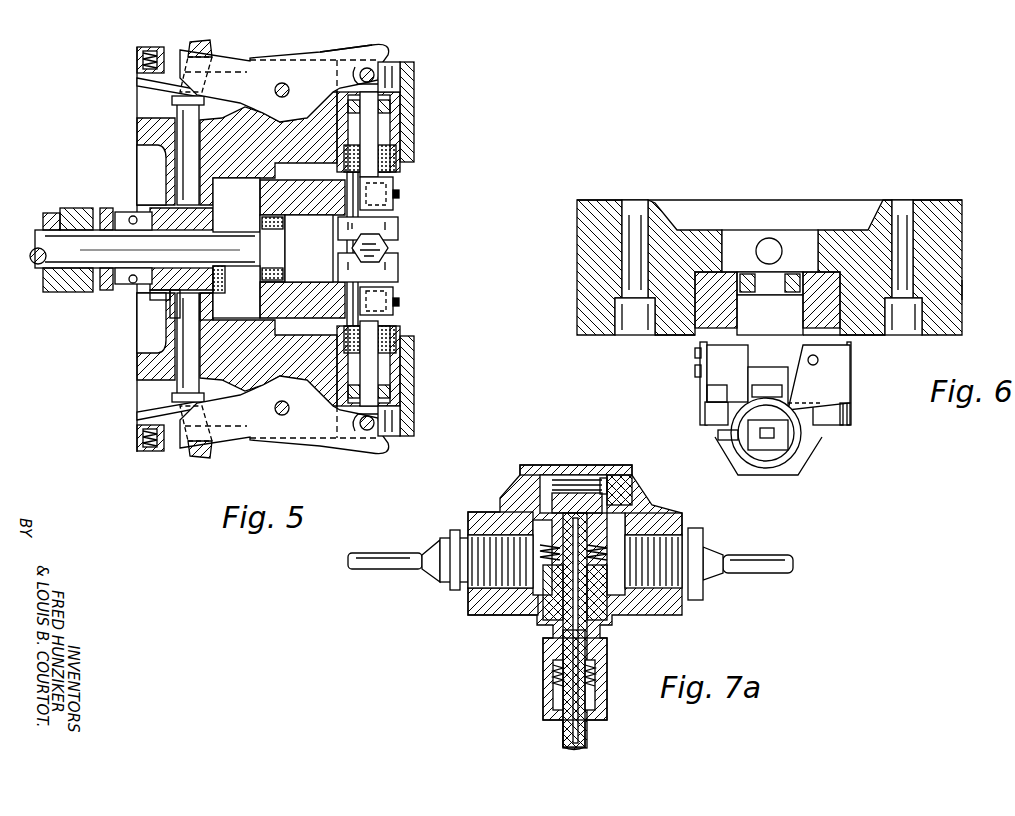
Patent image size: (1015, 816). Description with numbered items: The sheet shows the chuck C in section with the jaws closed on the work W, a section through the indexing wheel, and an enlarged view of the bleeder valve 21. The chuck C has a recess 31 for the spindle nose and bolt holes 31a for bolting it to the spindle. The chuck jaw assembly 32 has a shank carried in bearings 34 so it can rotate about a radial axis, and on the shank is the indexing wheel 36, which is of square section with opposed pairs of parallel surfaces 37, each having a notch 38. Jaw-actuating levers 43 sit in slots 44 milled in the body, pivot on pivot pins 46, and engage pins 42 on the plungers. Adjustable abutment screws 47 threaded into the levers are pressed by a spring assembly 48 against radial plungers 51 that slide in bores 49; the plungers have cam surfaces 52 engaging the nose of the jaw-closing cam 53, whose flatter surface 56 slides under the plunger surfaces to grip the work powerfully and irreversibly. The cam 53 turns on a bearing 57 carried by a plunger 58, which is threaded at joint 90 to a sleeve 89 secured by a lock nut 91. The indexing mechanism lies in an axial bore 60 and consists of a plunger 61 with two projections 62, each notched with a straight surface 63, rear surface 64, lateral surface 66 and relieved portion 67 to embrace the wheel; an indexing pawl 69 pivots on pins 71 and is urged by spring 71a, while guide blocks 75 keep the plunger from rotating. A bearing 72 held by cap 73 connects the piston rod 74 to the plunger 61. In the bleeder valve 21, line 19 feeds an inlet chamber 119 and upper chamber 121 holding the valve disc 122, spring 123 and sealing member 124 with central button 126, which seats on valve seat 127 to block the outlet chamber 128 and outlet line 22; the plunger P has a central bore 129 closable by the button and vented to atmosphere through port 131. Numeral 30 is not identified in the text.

In FIG. 5, the chuck C is at (137, 120).
In FIG. 6, the chuck C is at (965, 298).
In FIG. 5, the spring assembly 48 is at (137, 66).
In FIG. 5, the recess 31 is at (137, 165).
In FIG. 6, the recess 31 is at (884, 202).
In FIG. 6, the bolt holes 31a is at (900, 204).
In FIG. 5, the radial plungers 51 is at (190, 178).
In FIG. 5, the flatter surface 56 is at (185, 205).
In FIG. 5, the jaw-closing cam 53 is at (160, 300).
In FIG. 5, the cam surfaces 52 is at (175, 318).
In FIG. 5, the bores 49 is at (205, 318).
In FIG. 5, the sleeve 89 is at (42, 268).
In FIG. 5, the lock nut 91 is at (51, 213).
In FIG. 5, the threaded joint 90 is at (66, 213).
In FIG. 5, the plunger 58 is at (76, 292).
In FIG. 5, the bearing 57 is at (120, 290).
In FIG. 5, the axial bore 60 is at (279, 205).
In FIG. 5, the cap 73 is at (253, 245).
In FIG. 6, the cap 73 is at (760, 251).
In FIG. 5, the piston rod 74 is at (236, 292).
In FIG. 5, the plunger 61 is at (258, 305).
In FIG. 6, the plunger 61 is at (676, 336).
In FIG. 5, the bearing 72 is at (280, 247).
In FIG. 6, the bearing 72 is at (780, 262).
In FIG. 5, the slots 44 is at (288, 56).
In FIG. 5, the jaw-actuating levers 43 is at (345, 46).
In FIG. 5, the pivot pins 46 is at (289, 88).
In FIG. 5, the pins 42 is at (380, 54).
In FIG. 5, the adjustable abutment screws 47 is at (212, 46).
In FIG. 5, the bearings 34 is at (402, 109).
In FIG. 5, the frame block 30 is at (415, 88).
In FIG. 6, the frame block 30 is at (962, 250).
In FIG. 5, the indexing wheel 36 is at (395, 194).
In FIG. 6, the indexing wheel 36 is at (776, 480).
In FIG. 5, the chuck jaw assembly 32 is at (402, 226).
In FIG. 5, the work W is at (402, 250).
In FIG. 6, the work W is at (766, 433).
In FIG. 5, the indexing pawl 69 is at (402, 302).
In FIG. 6, the indexing pawl 69 is at (848, 420).
In FIG. 6, the pins 71 is at (838, 360).
In FIG. 6, the spring 71a is at (840, 344).
In FIG. 6, the guide blocks 75 is at (700, 420).
In FIG. 6, the lateral surface 66 is at (727, 373).
In FIG. 6, the relieved portion 67 is at (719, 388).
In FIG. 6, the rear surface 64 is at (772, 370).
In FIG. 6, the straight surface 63 is at (844, 386).
In FIG. 6, the projections 62 is at (694, 382).
In FIG. 6, the parallel surfaces 37 is at (824, 466).
In FIG. 6, the notch 38 is at (726, 436).
In FIG. 7A, the bleeder valve 21 is at (651, 498).
In FIG. 7A, the valve disc 122 is at (519, 474).
In FIG. 7A, the spring 123 is at (580, 476).
In FIG. 7A, the sealing member 124 is at (548, 476).
In FIG. 7A, the central button 126 is at (610, 478).
In FIG. 7A, the upper chamber 121 is at (640, 478).
In FIG. 7A, the valve seat 127 is at (502, 508).
In FIG. 7A, the inlet chamber 119 is at (635, 514).
In FIG. 7A, the central bore 129 is at (600, 626).
In FIG. 7A, the outlet chamber 128 is at (518, 614).
In FIG. 7A, the port 131 is at (598, 676).
In FIG. 7A, the plunger P is at (590, 724).
In FIG. 7A, the outlet line 22 is at (396, 554).
In FIG. 7A, the inlet line 19 is at (762, 562).